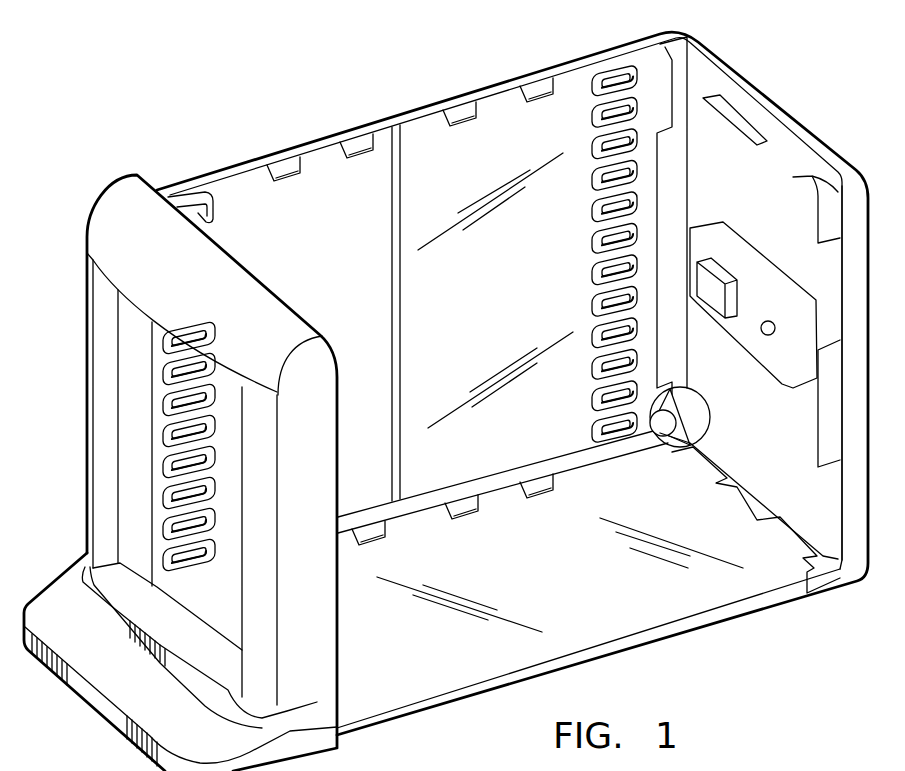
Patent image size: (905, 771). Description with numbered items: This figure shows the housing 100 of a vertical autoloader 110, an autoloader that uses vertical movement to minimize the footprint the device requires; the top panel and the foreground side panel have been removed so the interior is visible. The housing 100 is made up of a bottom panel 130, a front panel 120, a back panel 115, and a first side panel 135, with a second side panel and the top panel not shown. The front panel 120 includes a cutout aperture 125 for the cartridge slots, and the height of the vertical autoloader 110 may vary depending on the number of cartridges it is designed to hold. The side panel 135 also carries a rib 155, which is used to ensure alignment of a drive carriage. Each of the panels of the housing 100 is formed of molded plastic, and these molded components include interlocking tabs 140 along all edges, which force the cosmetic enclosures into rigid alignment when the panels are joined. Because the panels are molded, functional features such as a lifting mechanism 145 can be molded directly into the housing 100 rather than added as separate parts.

The housing 100 is at (776, 62).
The vertical autoloader 110 is at (836, 107).
The back panel 115 is at (852, 523).
The front panel 120 is at (124, 682).
The cutout aperture 125 is at (233, 478).
The bottom panel 130 is at (680, 633).
The first side panel 135 is at (250, 167).
The interlocking tabs 140 is at (535, 97).
The lifting mechanism 145 is at (655, 57).
The rib 155 is at (402, 135).